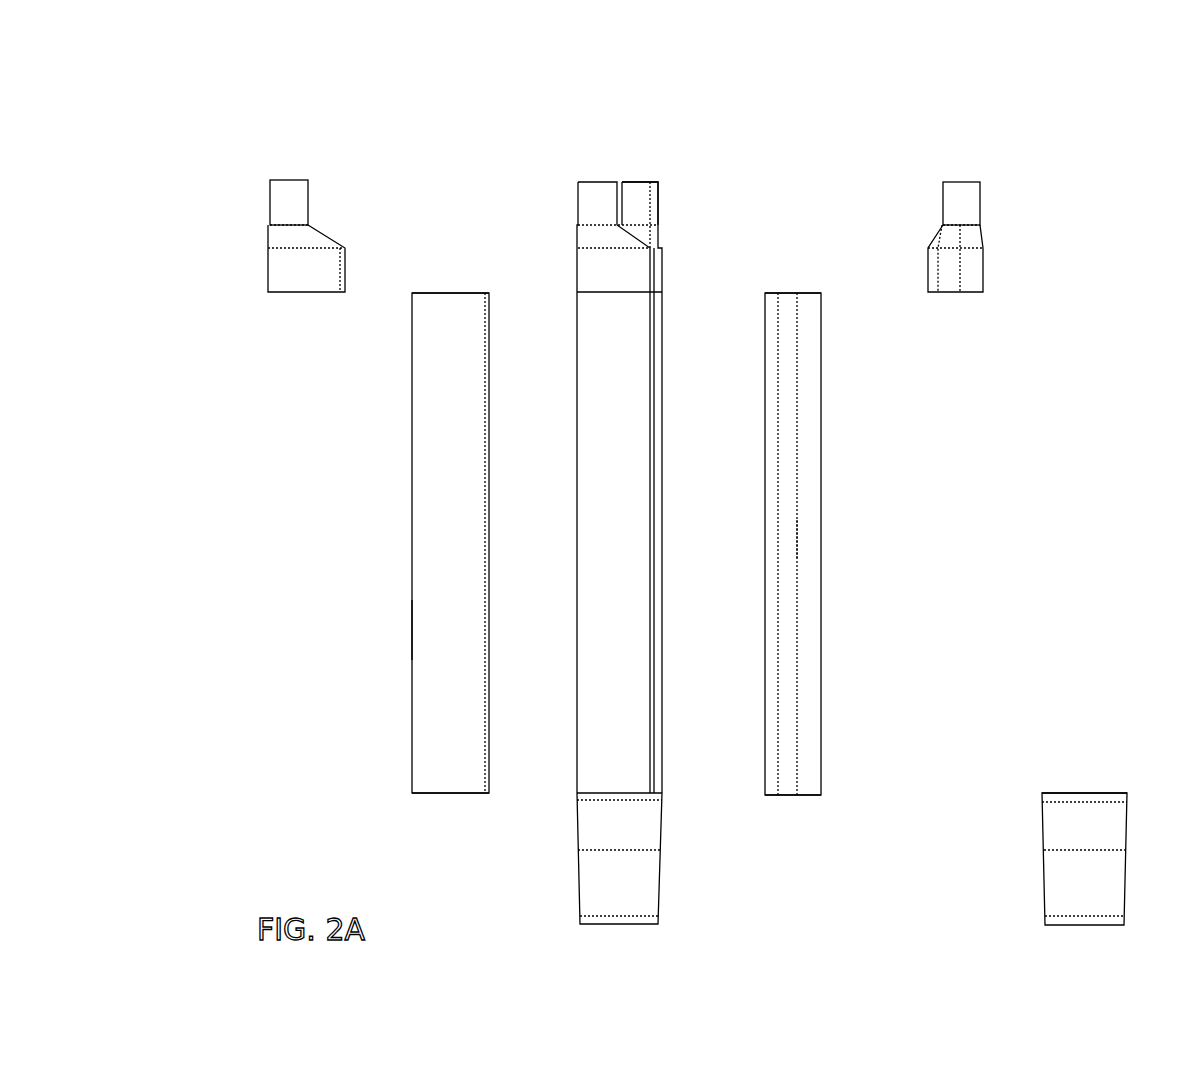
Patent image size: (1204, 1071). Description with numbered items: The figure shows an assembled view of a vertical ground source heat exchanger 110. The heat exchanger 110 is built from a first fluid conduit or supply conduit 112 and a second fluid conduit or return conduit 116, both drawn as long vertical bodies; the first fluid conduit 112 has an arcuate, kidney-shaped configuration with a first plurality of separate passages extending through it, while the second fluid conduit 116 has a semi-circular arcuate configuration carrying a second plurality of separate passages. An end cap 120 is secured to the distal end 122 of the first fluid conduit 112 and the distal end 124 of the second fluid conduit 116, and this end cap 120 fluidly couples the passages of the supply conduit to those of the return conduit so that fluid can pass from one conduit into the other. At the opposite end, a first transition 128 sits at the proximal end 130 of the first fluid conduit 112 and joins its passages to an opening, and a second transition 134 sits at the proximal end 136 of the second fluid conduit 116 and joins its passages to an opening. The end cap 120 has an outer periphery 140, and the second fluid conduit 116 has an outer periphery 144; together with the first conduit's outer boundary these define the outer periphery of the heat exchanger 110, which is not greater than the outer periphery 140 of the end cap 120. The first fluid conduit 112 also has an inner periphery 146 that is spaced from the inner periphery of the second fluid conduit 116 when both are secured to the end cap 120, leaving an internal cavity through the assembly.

The ground source heat exchanger 110 is at (621, 150).
The first fluid conduit 112 is at (794, 150).
The second fluid conduit 116 is at (449, 150).
The end cap 120 is at (1083, 725).
The distal end of the first fluid conduit 122 is at (809, 795).
The distal end of the second fluid conduit 124 is at (448, 795).
The first transition 128 is at (960, 150).
The proximal end of the first fluid conduit 130 is at (809, 293).
The second transition 134 is at (290, 150).
The proximal end of the second fluid conduit 136 is at (420, 293).
The outer periphery of the end cap 140 is at (1042, 798).
The outer periphery of the second fluid conduit 144 is at (446, 630).
The inner periphery of the first fluid conduit 146 is at (788, 542).